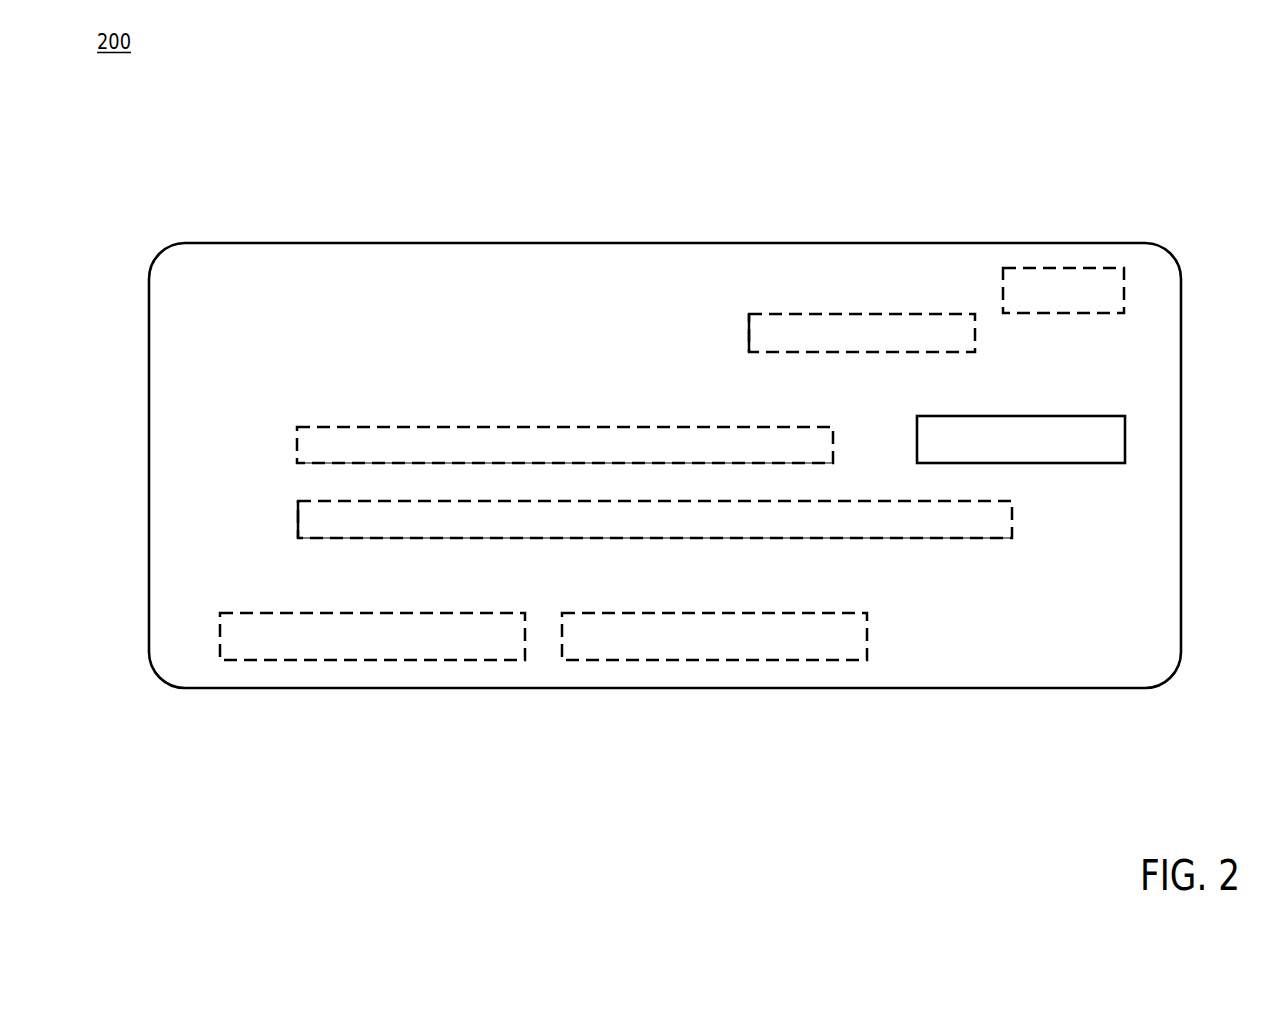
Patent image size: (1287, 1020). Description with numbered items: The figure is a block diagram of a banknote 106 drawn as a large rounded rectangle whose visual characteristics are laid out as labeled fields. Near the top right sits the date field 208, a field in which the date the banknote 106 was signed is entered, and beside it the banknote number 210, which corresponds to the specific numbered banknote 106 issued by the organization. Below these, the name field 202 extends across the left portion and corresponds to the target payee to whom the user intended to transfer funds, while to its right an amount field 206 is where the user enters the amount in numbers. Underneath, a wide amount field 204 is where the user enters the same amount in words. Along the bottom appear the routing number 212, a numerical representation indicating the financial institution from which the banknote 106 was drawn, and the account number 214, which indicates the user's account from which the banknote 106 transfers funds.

The banknote 106 is at (505, 243).
The name field 202 is at (450, 426).
The amount field 204 is at (297, 508).
The amount field 206 is at (1114, 464).
The date field 208 is at (748, 329).
The banknote number 210 is at (1086, 313).
The routing number 212 is at (464, 613).
The account number 214 is at (735, 613).